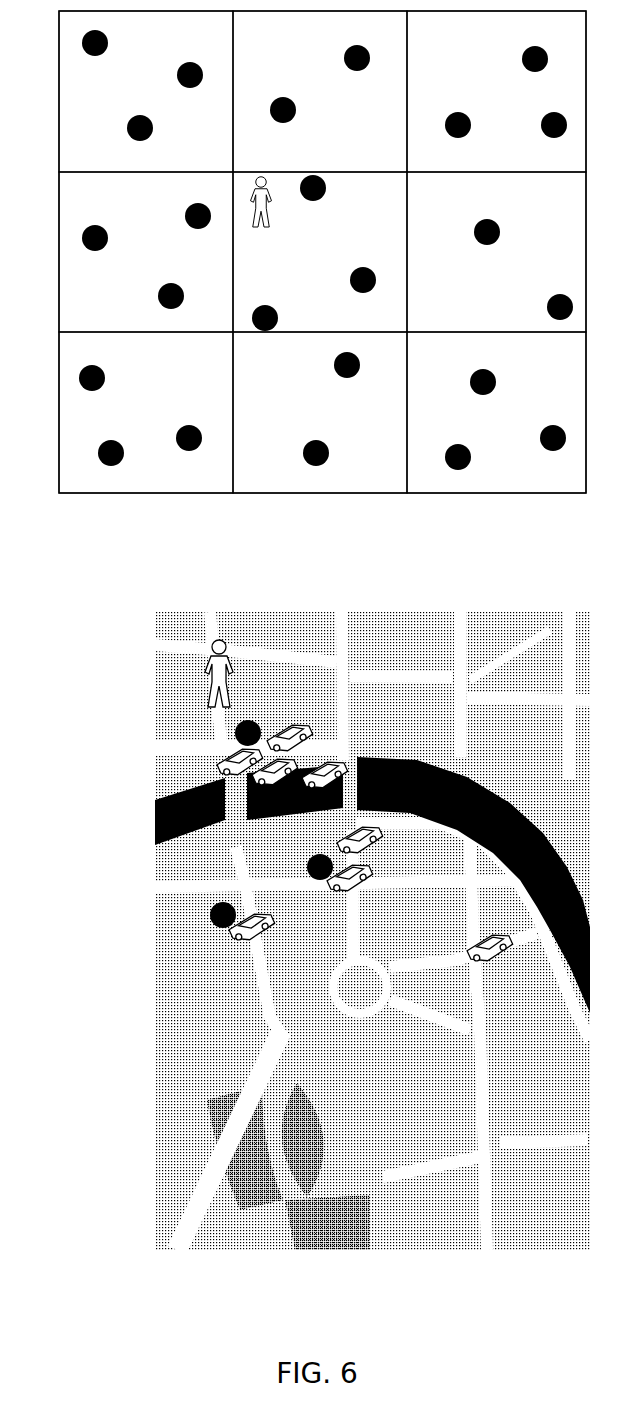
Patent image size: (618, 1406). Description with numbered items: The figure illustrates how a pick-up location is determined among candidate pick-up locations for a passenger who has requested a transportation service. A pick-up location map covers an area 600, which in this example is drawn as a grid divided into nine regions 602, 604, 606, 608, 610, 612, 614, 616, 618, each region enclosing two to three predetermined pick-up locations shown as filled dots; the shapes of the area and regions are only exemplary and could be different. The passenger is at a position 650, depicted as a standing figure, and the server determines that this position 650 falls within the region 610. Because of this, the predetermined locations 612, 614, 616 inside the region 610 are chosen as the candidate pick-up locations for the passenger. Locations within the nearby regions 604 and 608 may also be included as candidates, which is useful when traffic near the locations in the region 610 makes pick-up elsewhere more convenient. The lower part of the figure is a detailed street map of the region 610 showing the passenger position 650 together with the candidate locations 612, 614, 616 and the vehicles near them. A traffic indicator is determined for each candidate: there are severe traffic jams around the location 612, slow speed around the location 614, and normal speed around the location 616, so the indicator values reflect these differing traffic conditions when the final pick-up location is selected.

The area 600 is at (302, 576).
The region 602 is at (146, 91).
The region 604 is at (320, 91).
The region 606 is at (496, 91).
The region 608 is at (146, 252).
The region 610 is at (377, 1305).
The location 612 is at (107, 710).
The location 614 is at (310, 862).
The location 616 is at (83, 892).
The region 618 is at (496, 412).
The passenger position 650 is at (248, 204).